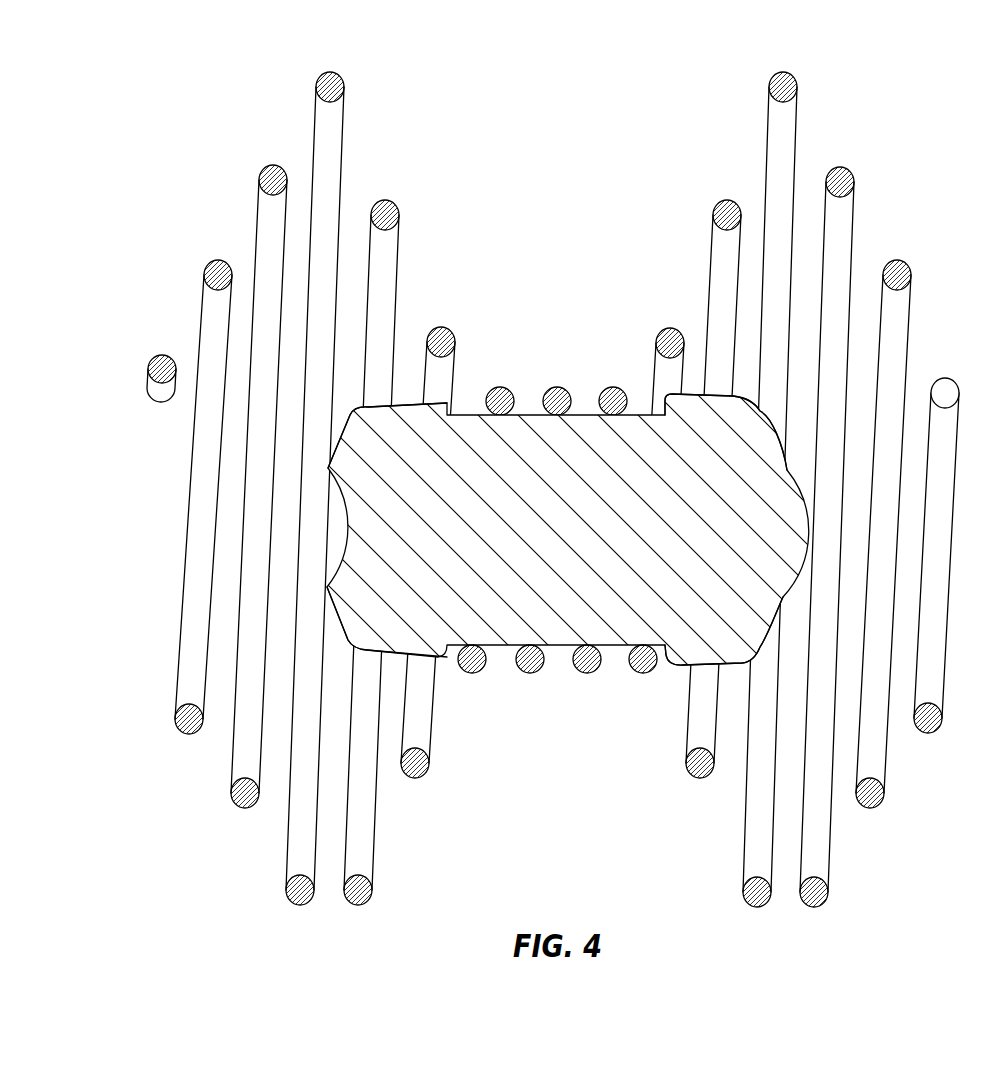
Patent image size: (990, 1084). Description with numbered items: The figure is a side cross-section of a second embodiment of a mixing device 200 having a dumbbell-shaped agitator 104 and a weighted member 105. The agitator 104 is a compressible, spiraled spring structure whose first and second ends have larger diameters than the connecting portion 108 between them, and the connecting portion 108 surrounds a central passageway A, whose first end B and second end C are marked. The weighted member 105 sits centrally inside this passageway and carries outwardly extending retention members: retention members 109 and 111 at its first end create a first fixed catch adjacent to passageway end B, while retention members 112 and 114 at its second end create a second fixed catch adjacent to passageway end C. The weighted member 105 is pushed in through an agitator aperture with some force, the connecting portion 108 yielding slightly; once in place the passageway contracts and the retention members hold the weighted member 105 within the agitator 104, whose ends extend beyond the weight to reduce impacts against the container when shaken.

The cable assembly 200 is at (907, 87).
The dumbbell-shaped agitator 104 is at (262, 218).
The weighted member 105 is at (527, 432).
The connecting portion 108 is at (663, 693).
The retention member 109 is at (362, 410).
The retention member 111 is at (358, 648).
The retention member 112 is at (733, 408).
The retention member 114 is at (733, 652).